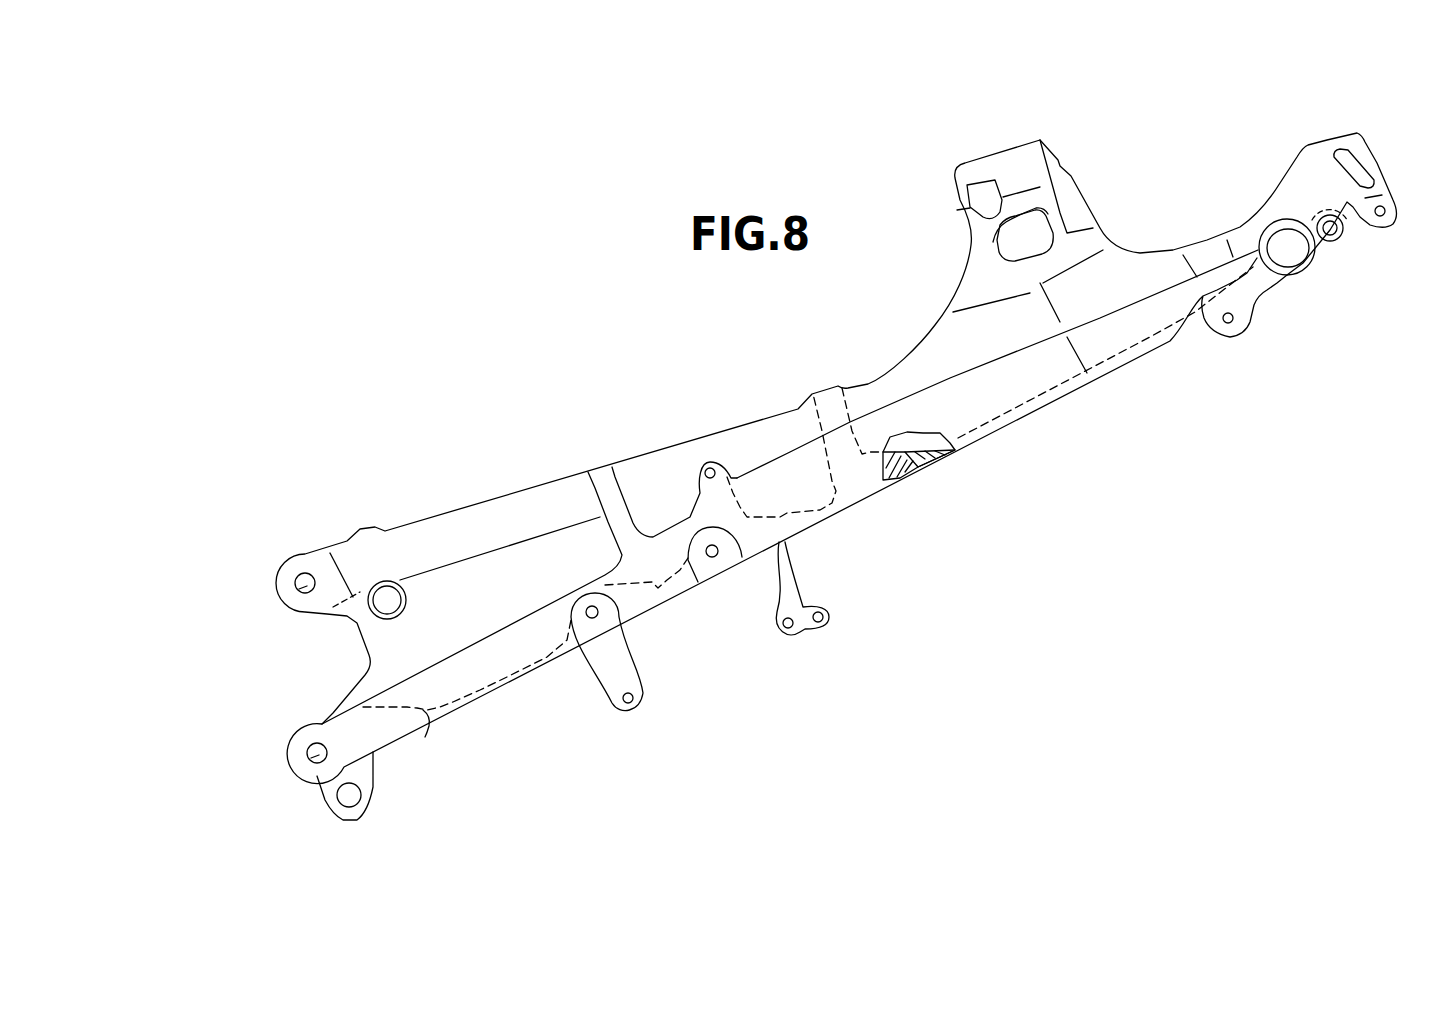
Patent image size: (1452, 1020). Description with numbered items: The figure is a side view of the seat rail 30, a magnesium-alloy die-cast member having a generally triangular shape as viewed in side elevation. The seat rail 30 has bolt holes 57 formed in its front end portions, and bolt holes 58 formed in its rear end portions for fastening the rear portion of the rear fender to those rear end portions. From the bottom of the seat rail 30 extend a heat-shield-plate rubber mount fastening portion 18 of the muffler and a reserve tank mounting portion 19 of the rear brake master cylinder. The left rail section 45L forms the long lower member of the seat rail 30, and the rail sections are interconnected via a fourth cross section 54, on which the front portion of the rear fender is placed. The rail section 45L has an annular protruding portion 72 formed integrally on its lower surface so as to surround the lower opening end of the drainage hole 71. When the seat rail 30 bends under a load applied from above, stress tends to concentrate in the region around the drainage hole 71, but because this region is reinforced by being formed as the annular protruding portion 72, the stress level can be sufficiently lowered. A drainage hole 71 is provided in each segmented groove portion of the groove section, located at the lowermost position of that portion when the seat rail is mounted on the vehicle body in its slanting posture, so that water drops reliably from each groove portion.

The seat rail 30 is at (651, 427).
The left rail section 45L is at (483, 627).
The fourth cross section 54 is at (1323, 135).
The bolt holes 57 is at (292, 593).
The bolt holes 58 is at (1383, 226).
The heat-shield-plate rubber mount fastening portion 18 is at (632, 703).
The reserve tank mounting portion 19 is at (793, 630).
The drainage hole 71 is at (920, 472).
The annular protruding portion 72 is at (902, 481).